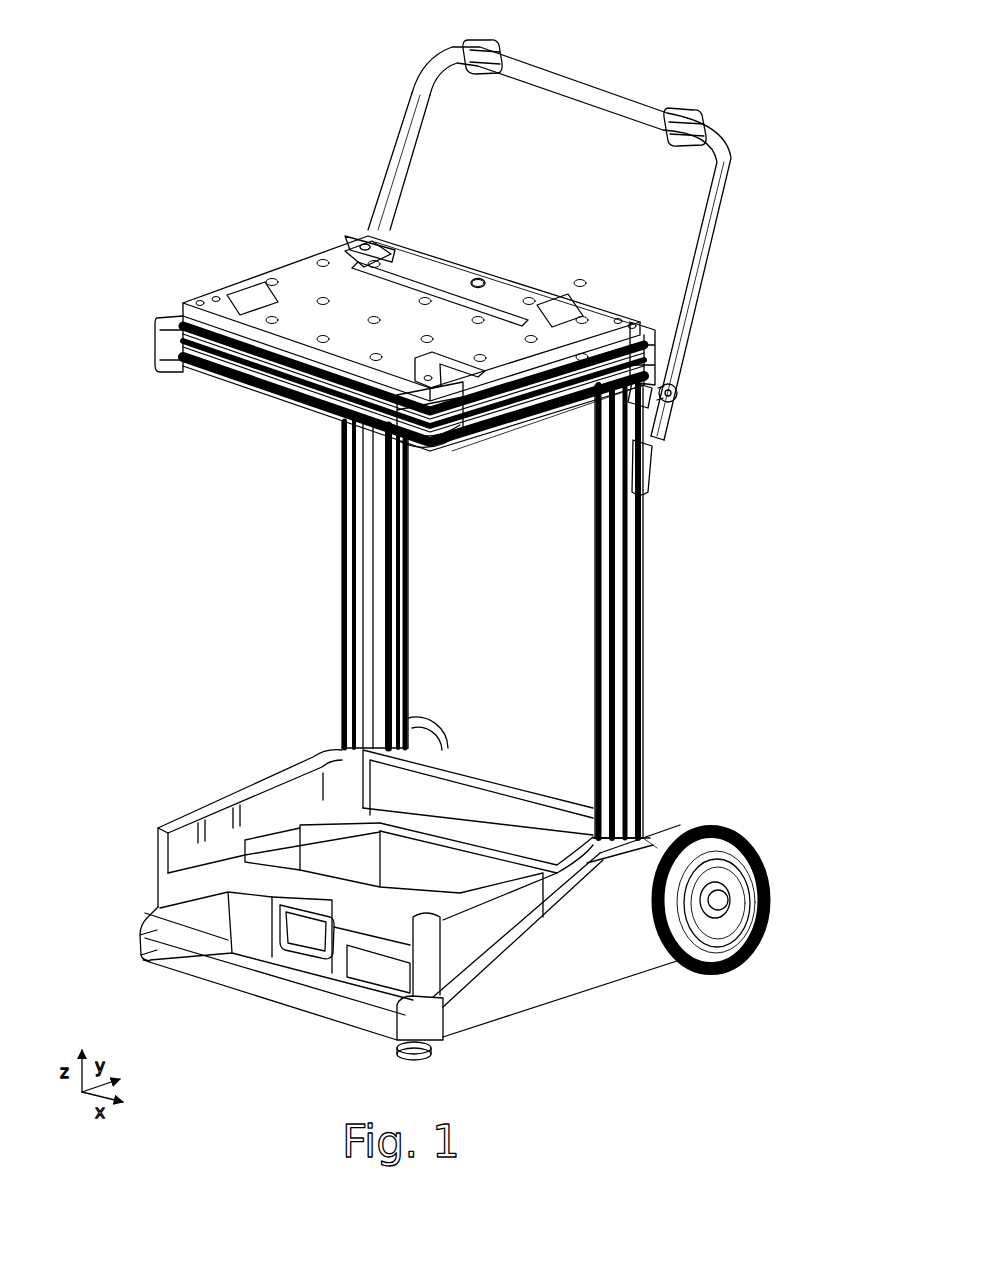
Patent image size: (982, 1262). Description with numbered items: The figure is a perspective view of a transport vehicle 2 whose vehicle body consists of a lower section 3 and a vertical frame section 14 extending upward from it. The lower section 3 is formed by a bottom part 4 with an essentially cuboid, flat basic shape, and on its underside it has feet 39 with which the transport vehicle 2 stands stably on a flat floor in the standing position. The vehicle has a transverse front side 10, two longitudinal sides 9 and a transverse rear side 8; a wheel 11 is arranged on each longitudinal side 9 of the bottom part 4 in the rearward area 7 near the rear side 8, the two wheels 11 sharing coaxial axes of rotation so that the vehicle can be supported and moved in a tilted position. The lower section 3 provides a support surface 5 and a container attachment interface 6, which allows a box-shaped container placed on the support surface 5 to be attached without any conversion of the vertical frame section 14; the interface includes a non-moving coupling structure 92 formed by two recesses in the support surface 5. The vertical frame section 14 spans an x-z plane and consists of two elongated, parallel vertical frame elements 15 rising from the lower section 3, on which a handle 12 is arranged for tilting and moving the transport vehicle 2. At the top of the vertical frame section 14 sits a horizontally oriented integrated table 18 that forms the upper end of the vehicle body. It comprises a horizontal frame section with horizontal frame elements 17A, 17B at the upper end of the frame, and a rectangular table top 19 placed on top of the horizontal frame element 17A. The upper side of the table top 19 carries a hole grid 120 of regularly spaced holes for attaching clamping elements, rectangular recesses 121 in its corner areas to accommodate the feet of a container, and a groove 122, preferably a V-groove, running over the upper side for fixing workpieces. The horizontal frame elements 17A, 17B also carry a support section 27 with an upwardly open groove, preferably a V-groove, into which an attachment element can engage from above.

The transport vehicle 2 is at (430, 565).
The lower section 3 is at (430, 879).
The bottom part 4 is at (608, 963).
The support surface 5 is at (265, 882).
The container attachment interface 6 is at (293, 928).
The rearward area 7 is at (654, 766).
The transverse rear side 8 is at (625, 843).
The longitudinal sides 9 is at (337, 887).
The transverse front side 10 is at (203, 918).
The wheels 11 is at (748, 890).
The handle 12 is at (700, 273).
The vertical frame section 14 is at (485, 611).
The vertical frame elements 15 is at (345, 552).
The horizontal frame element 17A is at (403, 357).
The horizontal frame element 17B is at (495, 445).
The integrated table 18 is at (352, 352).
The table top 19 is at (383, 352).
The support section 27 is at (300, 387).
The feet 39 is at (180, 958).
The non-moving coupling structure 92 is at (320, 840).
The hole grid 120 is at (482, 282).
The recesses 121 is at (348, 244).
The groove 122 is at (400, 300).